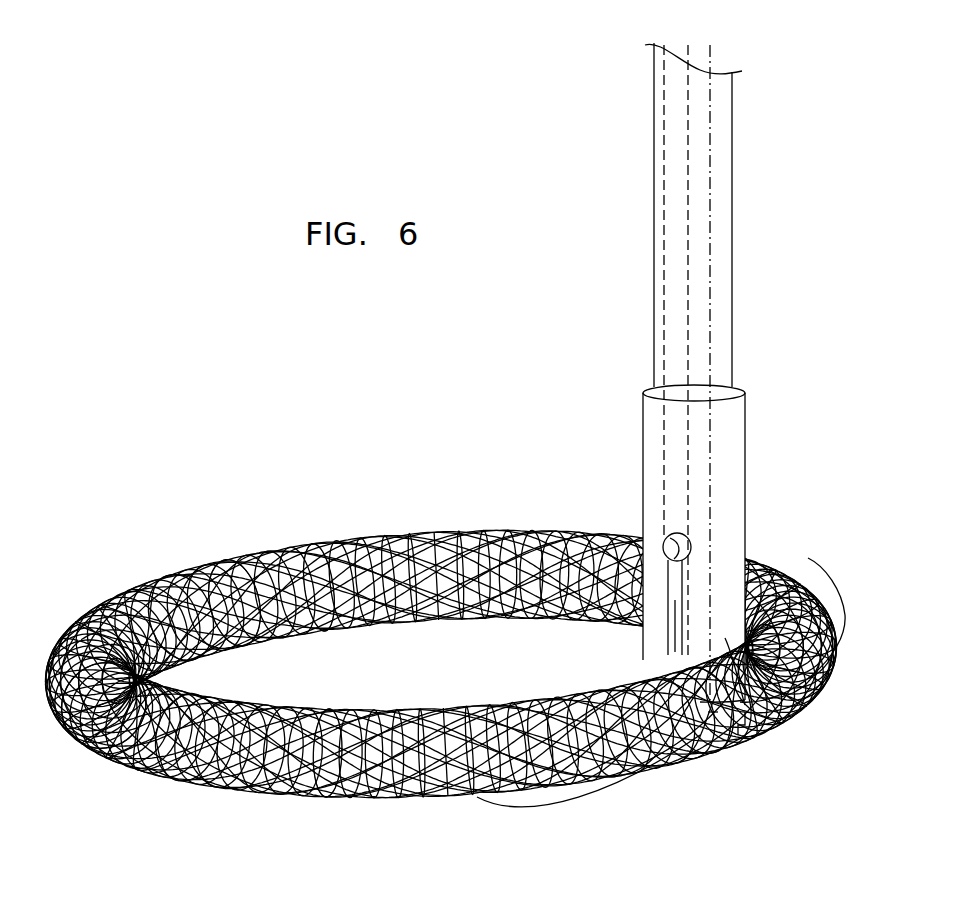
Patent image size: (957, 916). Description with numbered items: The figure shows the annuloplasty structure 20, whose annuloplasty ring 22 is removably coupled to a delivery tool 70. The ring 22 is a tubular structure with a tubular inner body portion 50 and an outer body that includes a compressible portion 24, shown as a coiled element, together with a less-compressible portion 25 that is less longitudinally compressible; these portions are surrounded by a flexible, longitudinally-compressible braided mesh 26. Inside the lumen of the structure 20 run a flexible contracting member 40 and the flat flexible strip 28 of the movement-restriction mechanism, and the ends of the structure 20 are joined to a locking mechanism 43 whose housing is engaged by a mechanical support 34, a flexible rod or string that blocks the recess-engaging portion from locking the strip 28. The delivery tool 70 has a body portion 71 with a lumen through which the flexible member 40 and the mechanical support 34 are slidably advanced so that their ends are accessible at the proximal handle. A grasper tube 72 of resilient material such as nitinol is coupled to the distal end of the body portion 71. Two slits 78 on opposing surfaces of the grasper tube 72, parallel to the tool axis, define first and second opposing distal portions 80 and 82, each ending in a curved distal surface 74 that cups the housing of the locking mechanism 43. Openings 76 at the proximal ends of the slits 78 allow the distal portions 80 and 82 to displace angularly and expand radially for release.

The annuloplasty structure 20 is at (287, 425).
The annuloplasty ring 22 is at (158, 772).
The compressible portion 24 is at (250, 565).
The less-compressible portion 25 is at (756, 737).
The braided mesh 26 is at (90, 738).
The flexible strip 28 is at (325, 560).
The mechanical support 34 is at (710, 218).
The flexible contracting member 40 is at (688, 146).
The locking mechanism 43 is at (713, 712).
The tubular inner body portion 50 is at (296, 790).
The delivery tool 70 is at (745, 280).
The body portion 71 is at (654, 213).
The grasper tube 72 is at (746, 462).
The curved distal surface 74 is at (740, 718).
The opening 76 is at (678, 533).
The slit 78 is at (676, 640).
The first distal portion 80 is at (770, 690).
The second distal portion 82 is at (672, 629).